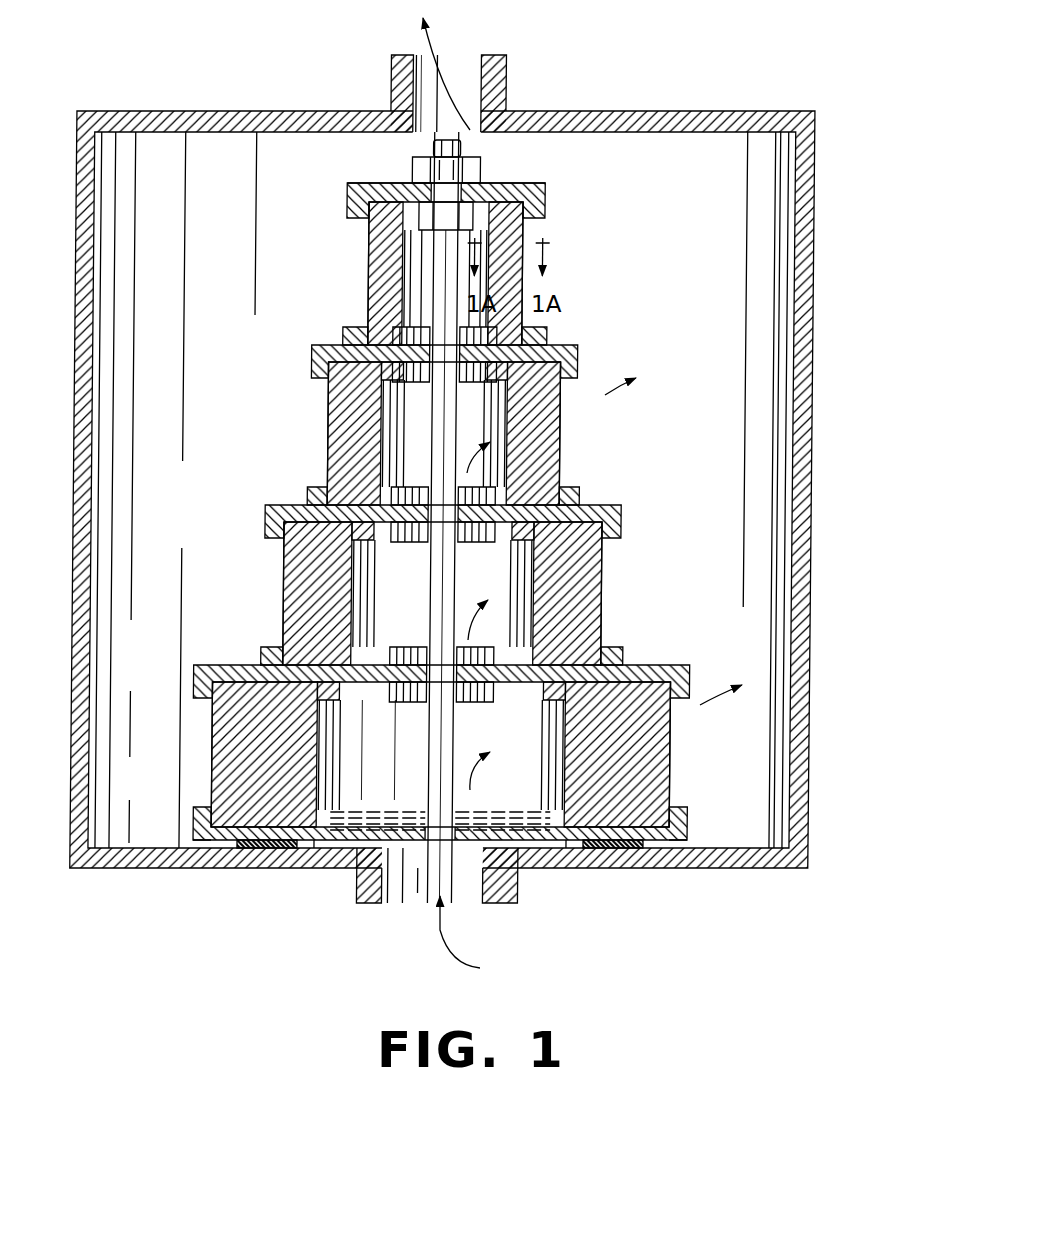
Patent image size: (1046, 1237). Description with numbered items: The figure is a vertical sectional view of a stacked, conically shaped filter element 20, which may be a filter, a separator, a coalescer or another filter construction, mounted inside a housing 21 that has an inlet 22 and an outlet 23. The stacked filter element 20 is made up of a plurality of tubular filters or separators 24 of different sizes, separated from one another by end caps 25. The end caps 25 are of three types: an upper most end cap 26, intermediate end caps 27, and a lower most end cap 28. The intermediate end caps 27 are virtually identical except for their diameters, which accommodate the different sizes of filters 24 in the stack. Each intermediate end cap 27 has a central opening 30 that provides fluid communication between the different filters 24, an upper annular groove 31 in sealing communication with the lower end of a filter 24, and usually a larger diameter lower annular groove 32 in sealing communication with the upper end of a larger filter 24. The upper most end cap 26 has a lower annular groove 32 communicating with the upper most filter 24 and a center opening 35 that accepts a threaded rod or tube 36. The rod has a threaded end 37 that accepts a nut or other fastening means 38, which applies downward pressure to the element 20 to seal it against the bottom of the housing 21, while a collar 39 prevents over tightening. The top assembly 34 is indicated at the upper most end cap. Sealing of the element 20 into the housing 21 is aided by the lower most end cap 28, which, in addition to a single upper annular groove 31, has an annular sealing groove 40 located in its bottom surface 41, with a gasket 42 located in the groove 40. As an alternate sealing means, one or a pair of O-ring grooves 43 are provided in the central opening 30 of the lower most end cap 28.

The stacked filter element 20 is at (655, 290).
The housing 21 is at (818, 378).
The inlet 22 is at (417, 905).
The outlet 23 is at (466, 54).
The filter 24 is at (527, 230).
The end cap 25 is at (552, 203).
The upper most end cap 26 is at (345, 202).
The intermediate end cap 27 is at (346, 338).
The lower most end cap 28 is at (210, 823).
The central opening 30 is at (468, 352).
The upper annular groove 31 is at (385, 335).
The lower annular groove 32 is at (373, 222).
The top assembly 34 is at (372, 187).
The center opening 35 is at (462, 200).
The threaded rod or tube 36 is at (432, 718).
The threaded end 37 is at (430, 145).
The nut or other fastening means 38 is at (477, 163).
The collar 39 is at (433, 224).
The annular sealing groove 40 is at (232, 848).
The bottom surface 41 is at (322, 848).
The gasket 42 is at (262, 848).
The O-ring groove 43 is at (545, 815).